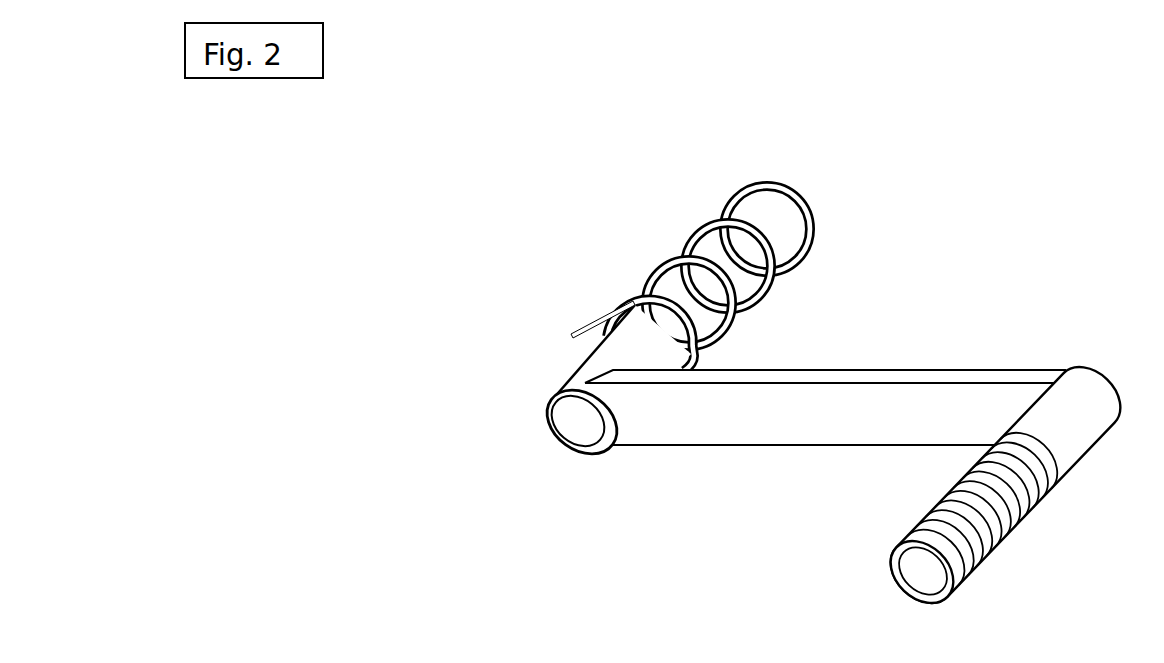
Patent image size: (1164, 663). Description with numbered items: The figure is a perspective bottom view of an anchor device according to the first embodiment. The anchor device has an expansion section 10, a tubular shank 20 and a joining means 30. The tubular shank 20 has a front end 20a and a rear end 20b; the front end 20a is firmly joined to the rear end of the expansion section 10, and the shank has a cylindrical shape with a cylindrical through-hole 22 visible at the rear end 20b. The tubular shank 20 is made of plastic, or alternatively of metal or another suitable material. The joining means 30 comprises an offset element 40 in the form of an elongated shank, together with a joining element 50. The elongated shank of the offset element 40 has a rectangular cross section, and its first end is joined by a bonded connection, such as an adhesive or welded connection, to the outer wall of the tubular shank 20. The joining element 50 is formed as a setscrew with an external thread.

The expansion section 10 is at (845, 175).
The tubular shank 20 is at (577, 380).
The front end 20a is at (680, 342).
The rear end 20b is at (552, 425).
The cylindrical through-hole 22 is at (580, 435).
The joining means 30 is at (866, 434).
The offset element 40 is at (812, 413).
The joining element 50 is at (1003, 537).